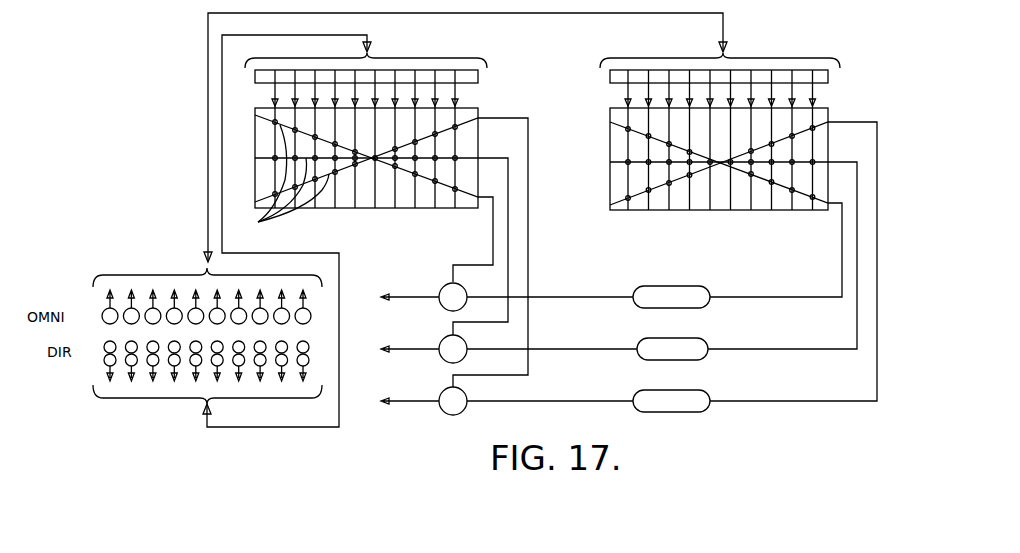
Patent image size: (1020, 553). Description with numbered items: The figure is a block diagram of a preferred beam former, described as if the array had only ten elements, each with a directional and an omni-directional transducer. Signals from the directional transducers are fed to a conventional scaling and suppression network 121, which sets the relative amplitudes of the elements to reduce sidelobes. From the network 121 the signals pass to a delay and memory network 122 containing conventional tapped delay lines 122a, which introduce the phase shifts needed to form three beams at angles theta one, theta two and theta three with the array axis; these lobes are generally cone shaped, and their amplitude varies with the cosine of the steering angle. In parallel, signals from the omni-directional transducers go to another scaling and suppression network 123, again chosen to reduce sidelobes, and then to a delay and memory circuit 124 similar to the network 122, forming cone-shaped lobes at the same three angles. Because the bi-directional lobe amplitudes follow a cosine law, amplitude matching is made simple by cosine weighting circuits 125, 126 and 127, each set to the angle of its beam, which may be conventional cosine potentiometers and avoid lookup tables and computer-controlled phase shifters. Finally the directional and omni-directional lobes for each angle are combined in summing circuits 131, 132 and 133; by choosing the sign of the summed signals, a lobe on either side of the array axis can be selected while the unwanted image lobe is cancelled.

The scaling and suppression network 121 is at (480, 78).
The delay and memory network 122 is at (387, 208).
The tapped delay lines 122a is at (276, 187).
The scaling and suppression network 123 is at (610, 78).
The delay and memory circuit 124 is at (718, 210).
The cosine weighting circuit 125 is at (649, 289).
The cosine weighting circuit 126 is at (647, 341).
The cosine weighting circuit 127 is at (645, 393).
The summing circuit 131 is at (443, 290).
The summing circuit 132 is at (443, 342).
The summing circuit 133 is at (443, 394).